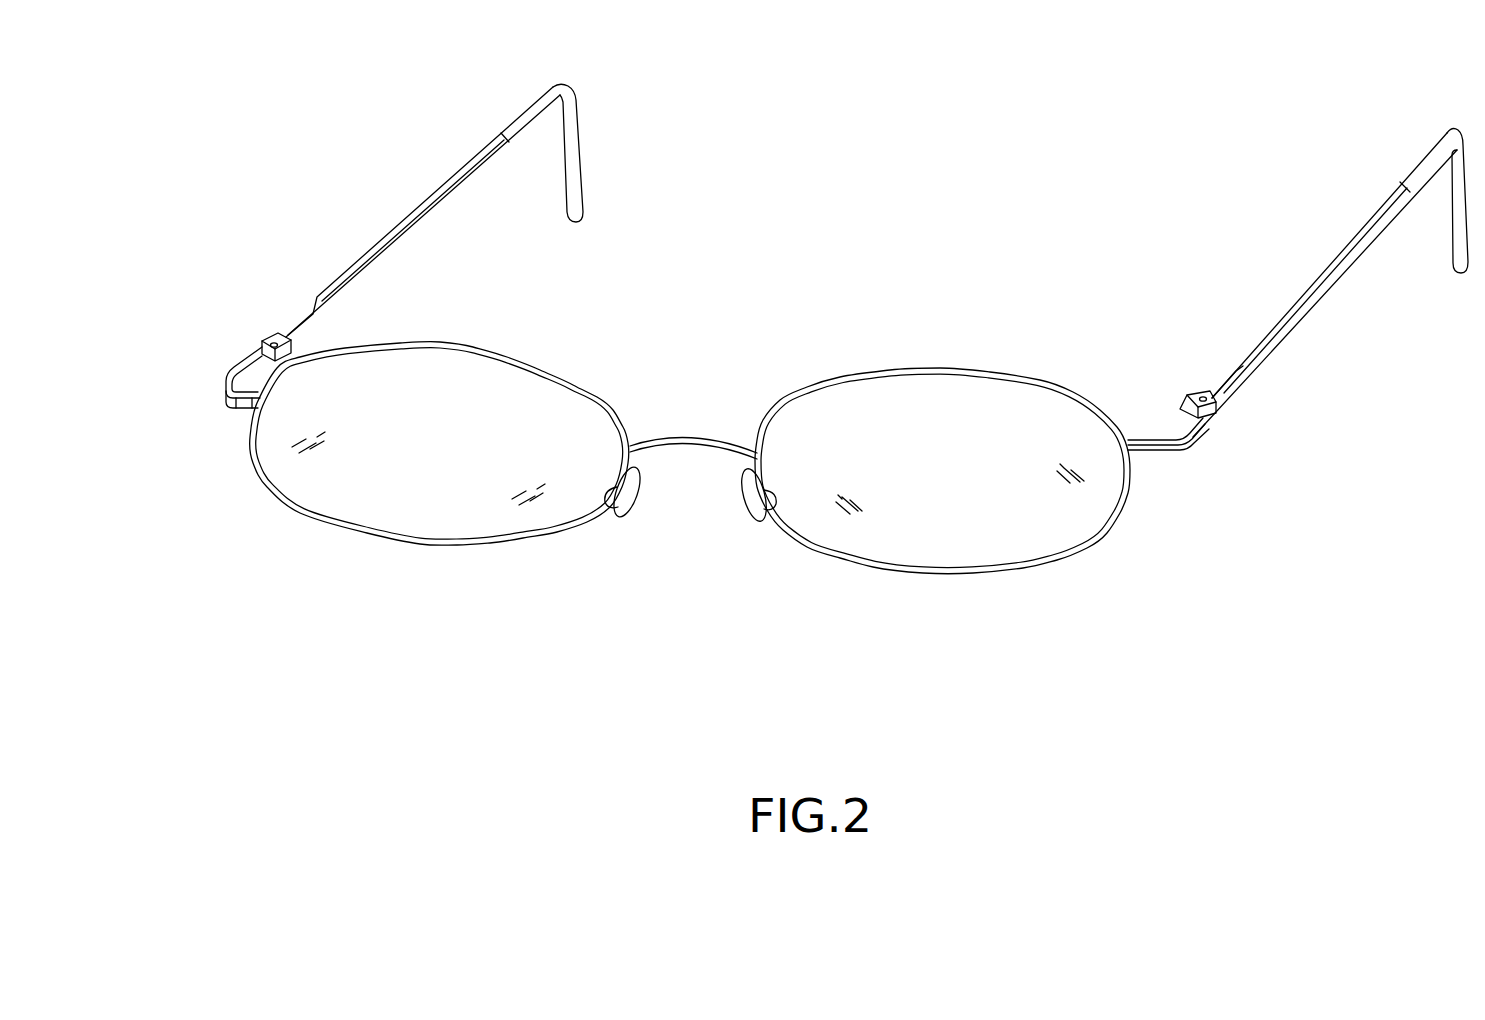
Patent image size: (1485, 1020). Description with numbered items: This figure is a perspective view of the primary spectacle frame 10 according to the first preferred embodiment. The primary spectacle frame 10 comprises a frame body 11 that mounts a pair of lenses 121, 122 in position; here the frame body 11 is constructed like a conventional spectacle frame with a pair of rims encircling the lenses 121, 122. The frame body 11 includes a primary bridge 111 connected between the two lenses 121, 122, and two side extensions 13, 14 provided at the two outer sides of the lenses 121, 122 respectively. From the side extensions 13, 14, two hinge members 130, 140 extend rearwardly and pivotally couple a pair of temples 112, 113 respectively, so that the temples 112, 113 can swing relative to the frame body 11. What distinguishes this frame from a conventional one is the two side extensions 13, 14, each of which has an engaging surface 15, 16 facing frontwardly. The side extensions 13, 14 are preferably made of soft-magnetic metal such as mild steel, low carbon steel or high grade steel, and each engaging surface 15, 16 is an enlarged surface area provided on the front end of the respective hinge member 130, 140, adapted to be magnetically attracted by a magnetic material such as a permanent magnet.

The primary spectacle frame 10 is at (880, 176).
The frame body 11 is at (866, 572).
The primary bridge 111 is at (685, 435).
The temple 112 is at (1297, 302).
The temple 113 is at (389, 231).
The lens 121 is at (808, 497).
The lens 122 is at (455, 512).
The side extension 13 is at (1155, 460).
The hinge member 130 is at (1232, 375).
The side extension 14 is at (228, 390).
The hinge member 140 is at (270, 337).
The engaging surface 15 is at (1180, 402).
The engaging surface 16 is at (243, 403).